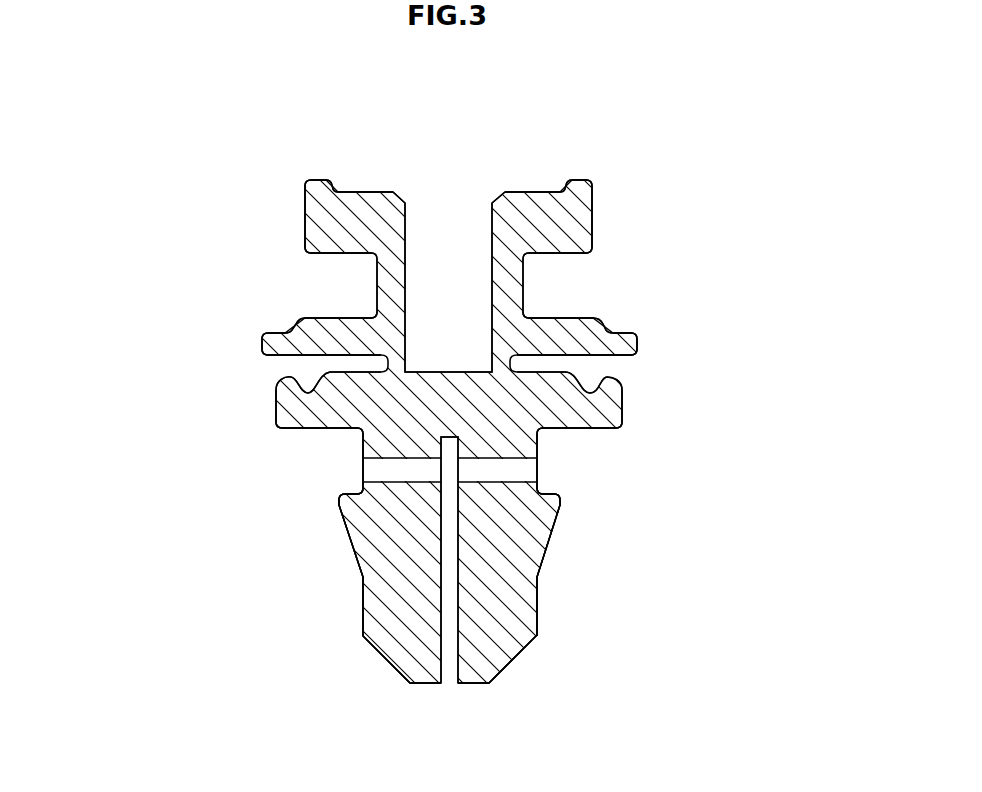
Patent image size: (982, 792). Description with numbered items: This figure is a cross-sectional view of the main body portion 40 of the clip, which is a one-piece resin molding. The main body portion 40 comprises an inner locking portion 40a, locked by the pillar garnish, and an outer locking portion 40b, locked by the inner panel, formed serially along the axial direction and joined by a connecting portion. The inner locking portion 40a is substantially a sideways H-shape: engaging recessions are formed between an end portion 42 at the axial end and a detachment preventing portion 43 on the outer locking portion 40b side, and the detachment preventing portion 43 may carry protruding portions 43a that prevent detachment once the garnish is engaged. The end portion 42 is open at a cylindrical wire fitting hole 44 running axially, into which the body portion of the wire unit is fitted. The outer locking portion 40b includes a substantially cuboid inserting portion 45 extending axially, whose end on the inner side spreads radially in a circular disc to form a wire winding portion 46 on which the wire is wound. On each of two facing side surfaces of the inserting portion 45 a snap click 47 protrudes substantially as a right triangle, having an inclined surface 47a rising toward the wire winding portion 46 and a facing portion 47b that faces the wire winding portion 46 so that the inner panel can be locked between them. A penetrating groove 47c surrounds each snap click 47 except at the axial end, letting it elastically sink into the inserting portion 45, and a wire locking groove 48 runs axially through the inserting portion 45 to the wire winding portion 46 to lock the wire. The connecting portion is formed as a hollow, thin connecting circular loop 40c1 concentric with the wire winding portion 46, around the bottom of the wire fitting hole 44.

The main body portion 40 is at (544, 105).
The inner locking portion 40a is at (212, 173).
The outer locking portion 40b is at (212, 383).
The connecting circular loop 40c1 is at (513, 358).
The end portion 42 is at (593, 213).
The detachment preventing portion 43 is at (637, 342).
The protruding portion 43a is at (563, 313).
The wire fitting hole 44 is at (428, 227).
The inserting portion 45 is at (358, 610).
The wire winding portion 46 is at (625, 390).
The snap click 47 is at (640, 480).
The inclined surface 47a is at (549, 543).
The facing portion 47b is at (555, 493).
The penetrating groove 47c is at (525, 466).
The wire locking groove 48 is at (458, 678).